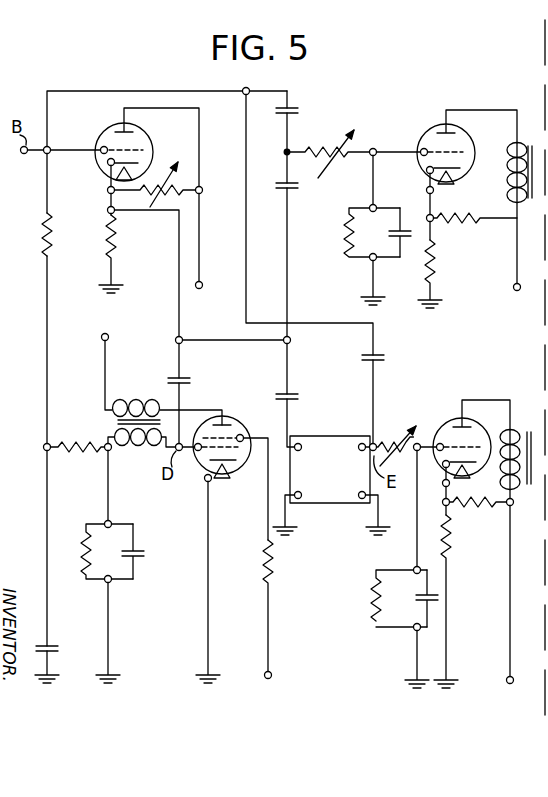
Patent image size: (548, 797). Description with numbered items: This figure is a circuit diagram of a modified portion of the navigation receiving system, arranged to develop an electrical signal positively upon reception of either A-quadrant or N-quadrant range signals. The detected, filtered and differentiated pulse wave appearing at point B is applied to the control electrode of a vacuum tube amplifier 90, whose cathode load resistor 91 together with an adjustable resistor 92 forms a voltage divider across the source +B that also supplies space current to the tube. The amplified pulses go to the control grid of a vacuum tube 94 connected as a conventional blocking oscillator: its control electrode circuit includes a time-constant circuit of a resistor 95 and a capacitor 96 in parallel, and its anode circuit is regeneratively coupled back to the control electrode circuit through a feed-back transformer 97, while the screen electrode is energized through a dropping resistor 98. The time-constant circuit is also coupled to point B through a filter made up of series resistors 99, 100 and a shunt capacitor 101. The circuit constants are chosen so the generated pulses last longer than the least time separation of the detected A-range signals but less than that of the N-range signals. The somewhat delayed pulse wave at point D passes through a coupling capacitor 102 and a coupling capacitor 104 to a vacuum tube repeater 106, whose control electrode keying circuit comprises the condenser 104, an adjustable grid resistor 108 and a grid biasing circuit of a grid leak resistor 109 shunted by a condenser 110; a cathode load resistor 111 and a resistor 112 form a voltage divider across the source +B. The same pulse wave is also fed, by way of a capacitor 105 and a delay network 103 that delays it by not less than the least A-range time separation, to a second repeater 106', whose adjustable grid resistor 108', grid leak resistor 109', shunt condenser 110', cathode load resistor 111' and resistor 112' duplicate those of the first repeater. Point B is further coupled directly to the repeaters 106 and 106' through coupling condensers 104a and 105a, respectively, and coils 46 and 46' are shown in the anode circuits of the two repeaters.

The vacuum tube amplifier 90 is at (102, 145).
The cathode load resistor 91 is at (102, 238).
The adjustable resistor 92 is at (190, 200).
The series resistor 100 is at (42, 238).
The vacuum tube 94 is at (238, 419).
The resistor 95 is at (80, 544).
The capacitor 96 is at (136, 550).
The feed-back transformer 97 is at (110, 420).
The dropping resistor 98 is at (262, 558).
The series resistor 99 is at (84, 440).
The shunt capacitor 101 is at (52, 641).
The coupling capacitor 102 is at (194, 362).
The delay network 103 is at (343, 441).
The coupling capacitor 104 is at (274, 184).
The coupling condenser 104a is at (300, 108).
The capacitor 105 is at (281, 390).
The coupling condenser 105a is at (378, 353).
The vacuum tube repeater 106 is at (447, 175).
The second repeater 106' is at (465, 457).
The adjustable grid resistor 108 is at (333, 152).
The adjustable grid resistor 108' is at (395, 441).
The grid leak resistor 109 is at (354, 231).
The grid leak resistor 109' is at (381, 570).
The shunt condenser 110 is at (384, 232).
The shunt condenser 110' is at (414, 598).
The cathode load resistor 111 is at (448, 274).
The cathode load resistor 111' is at (470, 601).
The resistor 112 is at (476, 232).
The resistor 112' is at (482, 514).
The deflection coil 46 is at (520, 213).
The deflection coil 46' is at (518, 555).